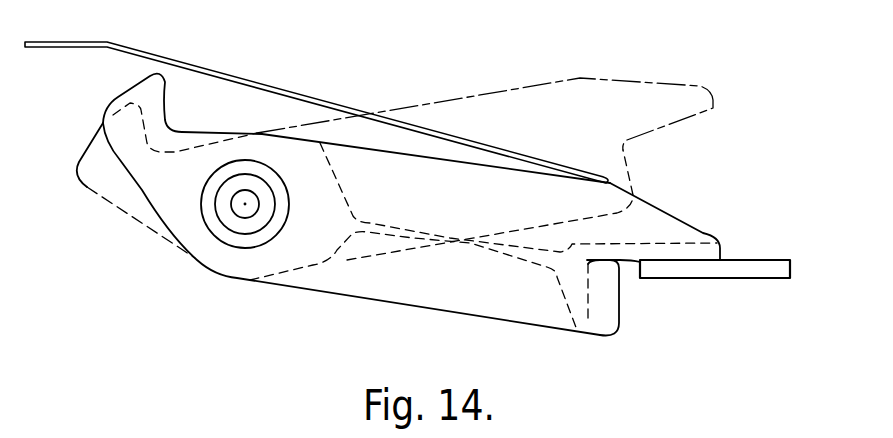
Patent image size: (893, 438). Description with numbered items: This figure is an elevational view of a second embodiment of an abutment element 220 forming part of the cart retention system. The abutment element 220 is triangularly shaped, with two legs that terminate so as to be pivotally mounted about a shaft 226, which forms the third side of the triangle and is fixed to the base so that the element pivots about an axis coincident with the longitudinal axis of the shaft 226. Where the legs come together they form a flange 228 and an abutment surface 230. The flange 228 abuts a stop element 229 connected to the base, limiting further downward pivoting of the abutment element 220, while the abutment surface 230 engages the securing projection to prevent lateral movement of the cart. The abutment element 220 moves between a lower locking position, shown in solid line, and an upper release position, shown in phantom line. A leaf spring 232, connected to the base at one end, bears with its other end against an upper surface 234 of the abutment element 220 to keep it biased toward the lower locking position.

The abutment element 220 is at (363, 147).
The shaft 226 is at (255, 230).
The flange 228 is at (703, 233).
The stop element 229 is at (747, 272).
The abutment surface 230 is at (633, 332).
The leaf spring 232 is at (248, 80).
The upper surface 234 is at (467, 163).